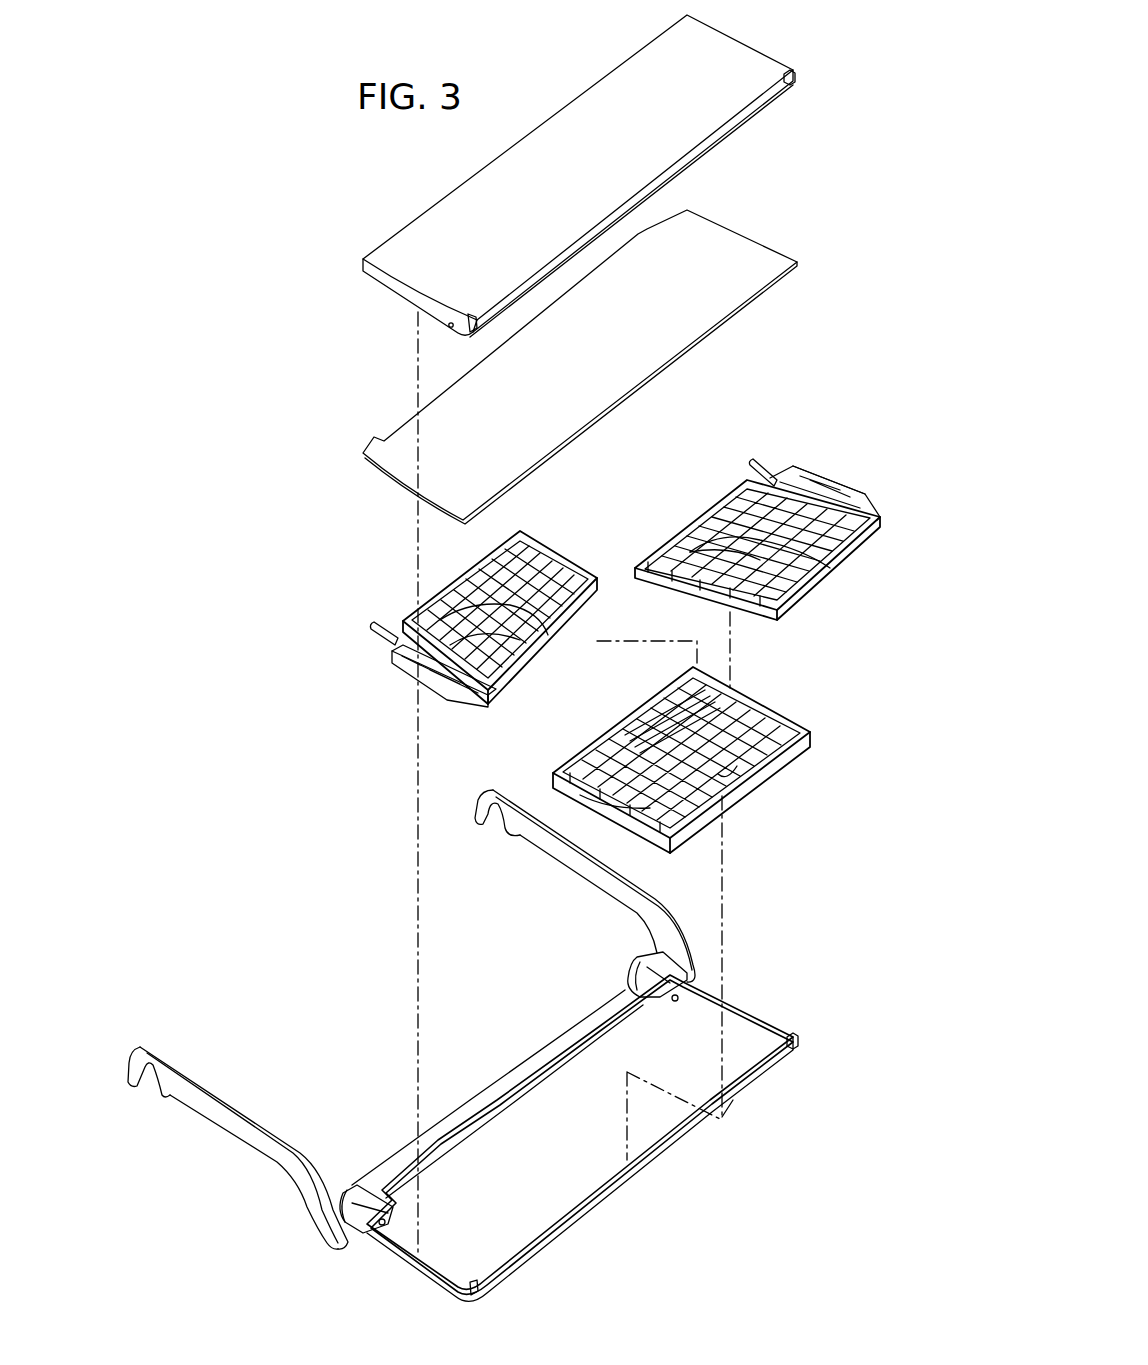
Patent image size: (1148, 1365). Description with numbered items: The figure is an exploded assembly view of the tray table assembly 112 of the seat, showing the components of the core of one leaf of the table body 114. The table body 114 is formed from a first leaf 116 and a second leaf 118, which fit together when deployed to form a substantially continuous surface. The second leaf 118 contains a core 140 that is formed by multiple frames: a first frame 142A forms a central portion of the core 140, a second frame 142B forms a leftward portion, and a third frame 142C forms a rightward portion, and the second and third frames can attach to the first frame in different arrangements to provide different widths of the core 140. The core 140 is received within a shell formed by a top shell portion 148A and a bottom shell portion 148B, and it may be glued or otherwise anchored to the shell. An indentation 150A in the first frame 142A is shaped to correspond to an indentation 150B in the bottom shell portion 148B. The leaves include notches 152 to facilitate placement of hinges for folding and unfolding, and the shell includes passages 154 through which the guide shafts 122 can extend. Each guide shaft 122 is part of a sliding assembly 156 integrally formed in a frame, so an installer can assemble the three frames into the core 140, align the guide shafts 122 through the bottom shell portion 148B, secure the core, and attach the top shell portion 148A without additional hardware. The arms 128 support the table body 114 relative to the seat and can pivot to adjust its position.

The tray table assembly 112 is at (240, 540).
The table body 114 is at (228, 729).
The first leaf 116 is at (742, 36).
The second leaf 118 is at (562, 1233).
The guide shaft 122 is at (775, 458).
The arm 128 is at (550, 843).
The core 140 is at (283, 655).
The first frame 142A is at (775, 700).
The second frame 142B is at (503, 690).
The third frame 142C is at (862, 548).
The top shell portion 148A is at (745, 234).
The bottom shell portion 148B is at (750, 1013).
The indentation 150A is at (745, 803).
The indentation 150B is at (642, 1168).
The notch 152 is at (785, 70).
The passage 154 is at (676, 1003).
The sliding assembly 156 is at (852, 460).